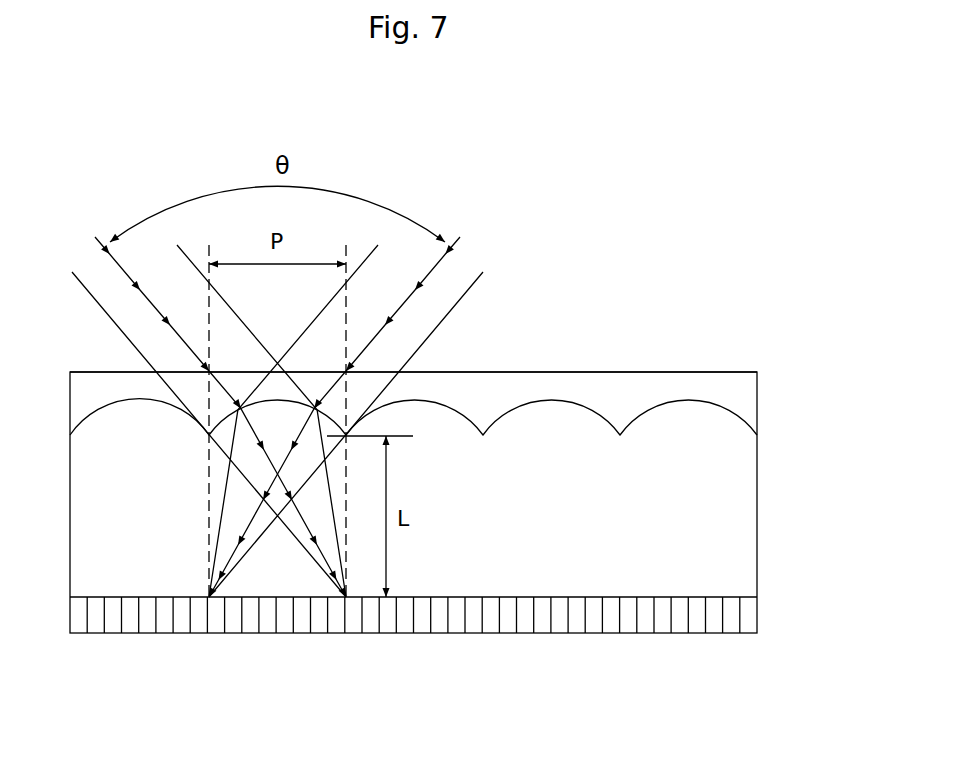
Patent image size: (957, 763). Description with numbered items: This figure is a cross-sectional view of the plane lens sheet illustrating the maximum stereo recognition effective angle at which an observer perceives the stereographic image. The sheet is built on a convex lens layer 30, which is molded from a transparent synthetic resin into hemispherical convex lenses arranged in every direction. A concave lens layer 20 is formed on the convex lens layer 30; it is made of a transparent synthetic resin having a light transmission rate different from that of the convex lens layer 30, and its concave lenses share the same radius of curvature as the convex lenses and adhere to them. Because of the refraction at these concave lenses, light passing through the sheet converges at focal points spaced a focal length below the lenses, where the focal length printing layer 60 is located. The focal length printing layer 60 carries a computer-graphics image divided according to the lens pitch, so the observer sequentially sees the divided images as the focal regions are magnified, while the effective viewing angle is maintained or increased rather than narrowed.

The concave lens layer 20 is at (740, 398).
The convex lens layer 30 is at (732, 513).
The focal length printing layer 60 is at (750, 613).